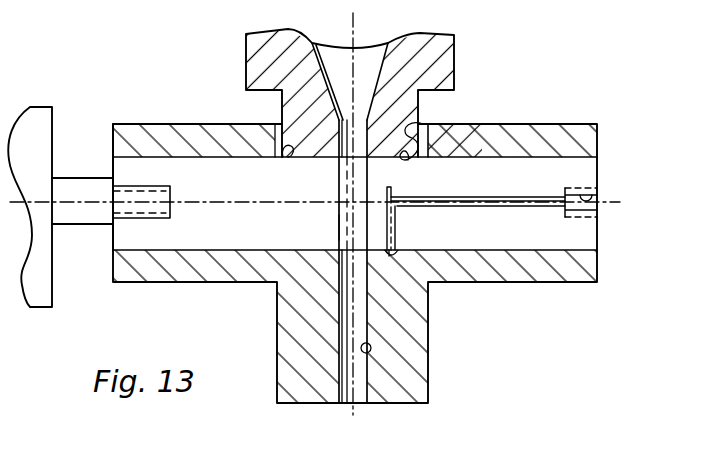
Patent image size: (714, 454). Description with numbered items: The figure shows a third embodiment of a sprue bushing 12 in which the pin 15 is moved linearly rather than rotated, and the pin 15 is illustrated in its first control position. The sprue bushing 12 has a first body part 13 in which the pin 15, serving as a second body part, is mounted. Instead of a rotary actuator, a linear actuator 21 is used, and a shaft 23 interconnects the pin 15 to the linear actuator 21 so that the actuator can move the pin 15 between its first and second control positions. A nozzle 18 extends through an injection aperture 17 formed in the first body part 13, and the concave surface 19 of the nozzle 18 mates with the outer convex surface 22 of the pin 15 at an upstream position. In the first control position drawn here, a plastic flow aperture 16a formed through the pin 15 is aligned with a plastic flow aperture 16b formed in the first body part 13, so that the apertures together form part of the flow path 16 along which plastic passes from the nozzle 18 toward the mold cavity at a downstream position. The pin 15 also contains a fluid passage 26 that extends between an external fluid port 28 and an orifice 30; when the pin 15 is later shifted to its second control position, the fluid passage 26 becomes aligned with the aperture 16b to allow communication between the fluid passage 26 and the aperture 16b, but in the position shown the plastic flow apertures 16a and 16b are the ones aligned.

The sprue bushing 12 is at (134, 122).
The first body part 13 is at (112, 140).
The pin 15 is at (113, 163).
The flow path 16 is at (346, 371).
The plastic flow aperture 16a is at (338, 224).
The plastic flow aperture 16b is at (376, 350).
The injection aperture 17 is at (424, 123).
The nozzle 18 is at (455, 43).
The concave surface 19 is at (456, 126).
The linear actuator 21 is at (43, 309).
The outer convex surface 22 is at (285, 157).
The shaft 23 is at (73, 226).
The fluid passage 26 is at (444, 198).
The external fluid port 28 is at (598, 190).
The orifice 30 is at (397, 255).